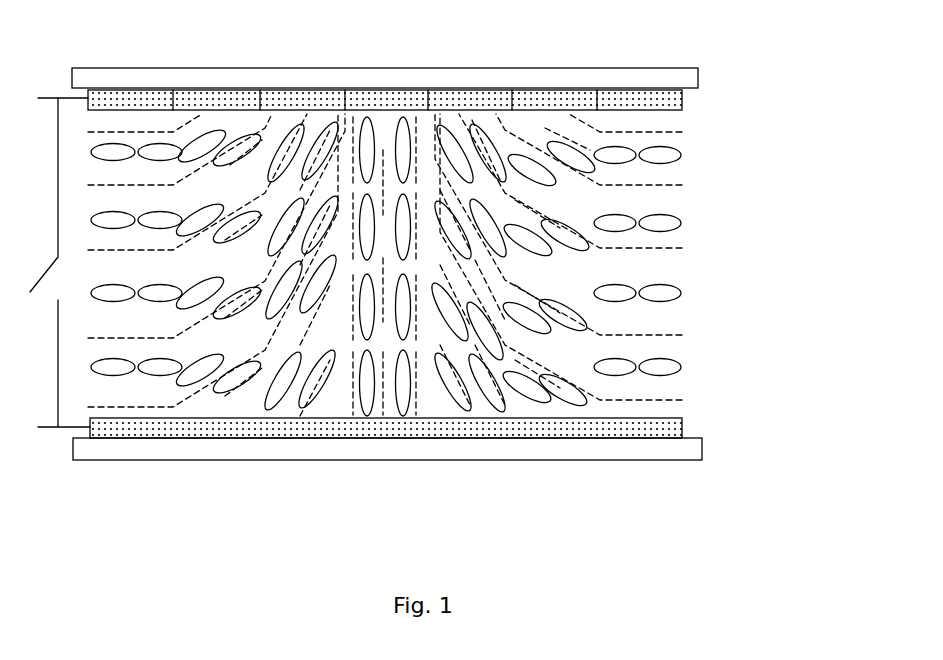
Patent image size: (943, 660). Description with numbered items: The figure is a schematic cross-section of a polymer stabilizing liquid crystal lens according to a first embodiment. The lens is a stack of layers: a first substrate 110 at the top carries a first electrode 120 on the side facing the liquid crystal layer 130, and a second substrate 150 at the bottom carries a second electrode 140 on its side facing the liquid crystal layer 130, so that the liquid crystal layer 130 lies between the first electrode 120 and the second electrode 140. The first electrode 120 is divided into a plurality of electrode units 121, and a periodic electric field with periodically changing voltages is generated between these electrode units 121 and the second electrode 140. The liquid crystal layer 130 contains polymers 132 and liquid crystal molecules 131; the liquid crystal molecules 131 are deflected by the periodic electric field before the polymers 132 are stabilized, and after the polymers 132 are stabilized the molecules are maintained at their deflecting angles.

The first substrate 110 is at (700, 78).
The first electrode 120 is at (448, 59).
The electrode units 121 is at (310, 92).
The liquid crystal layer 130 is at (451, 265).
The liquid crystal molecules 131 is at (670, 218).
The polymers 132 is at (660, 342).
The second electrode 140 is at (684, 428).
The second substrate 150 is at (672, 455).